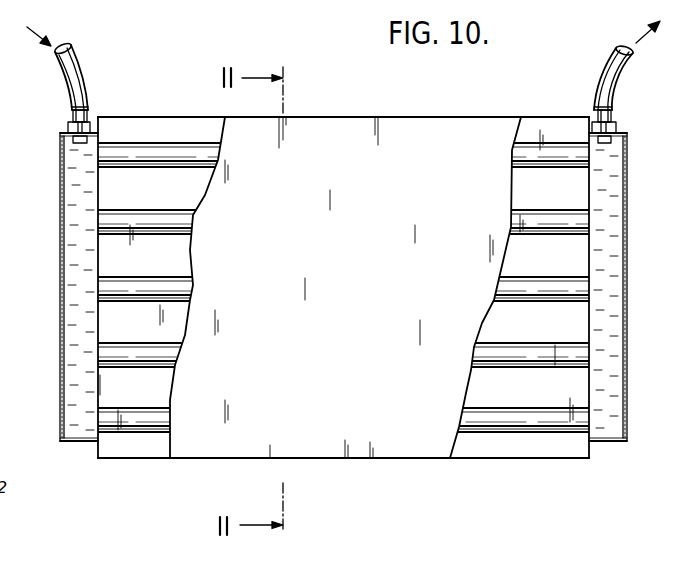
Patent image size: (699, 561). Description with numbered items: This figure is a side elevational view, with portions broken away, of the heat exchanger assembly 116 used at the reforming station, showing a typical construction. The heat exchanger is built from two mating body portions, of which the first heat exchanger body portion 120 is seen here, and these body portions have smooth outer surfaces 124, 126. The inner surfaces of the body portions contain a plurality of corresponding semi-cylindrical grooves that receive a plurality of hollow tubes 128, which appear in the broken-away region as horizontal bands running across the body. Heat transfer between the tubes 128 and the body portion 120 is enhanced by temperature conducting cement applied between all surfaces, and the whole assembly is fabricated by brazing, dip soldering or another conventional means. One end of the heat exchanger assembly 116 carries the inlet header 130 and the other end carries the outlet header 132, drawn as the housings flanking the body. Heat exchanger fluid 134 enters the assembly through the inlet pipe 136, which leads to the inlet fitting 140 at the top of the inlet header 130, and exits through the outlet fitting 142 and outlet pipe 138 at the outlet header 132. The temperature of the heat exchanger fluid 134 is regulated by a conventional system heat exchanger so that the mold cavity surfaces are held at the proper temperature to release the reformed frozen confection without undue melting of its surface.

The heat exchanger assembly 116 is at (497, 113).
The first heat exchanger body portion 120 is at (363, 125).
The smooth outer surface 124 is at (328, 455).
The smooth outer surface 126 is at (160, 123).
The hollow tubes 128 is at (182, 293).
The inlet header 130 is at (82, 442).
The outlet header 132 is at (616, 443).
The heat exchanger fluid 134 is at (72, 212).
The inlet pipe 136 is at (80, 63).
The outlet pipe 138 is at (611, 67).
The inlet fitting 140 is at (68, 124).
The outlet fitting 142 is at (616, 128).